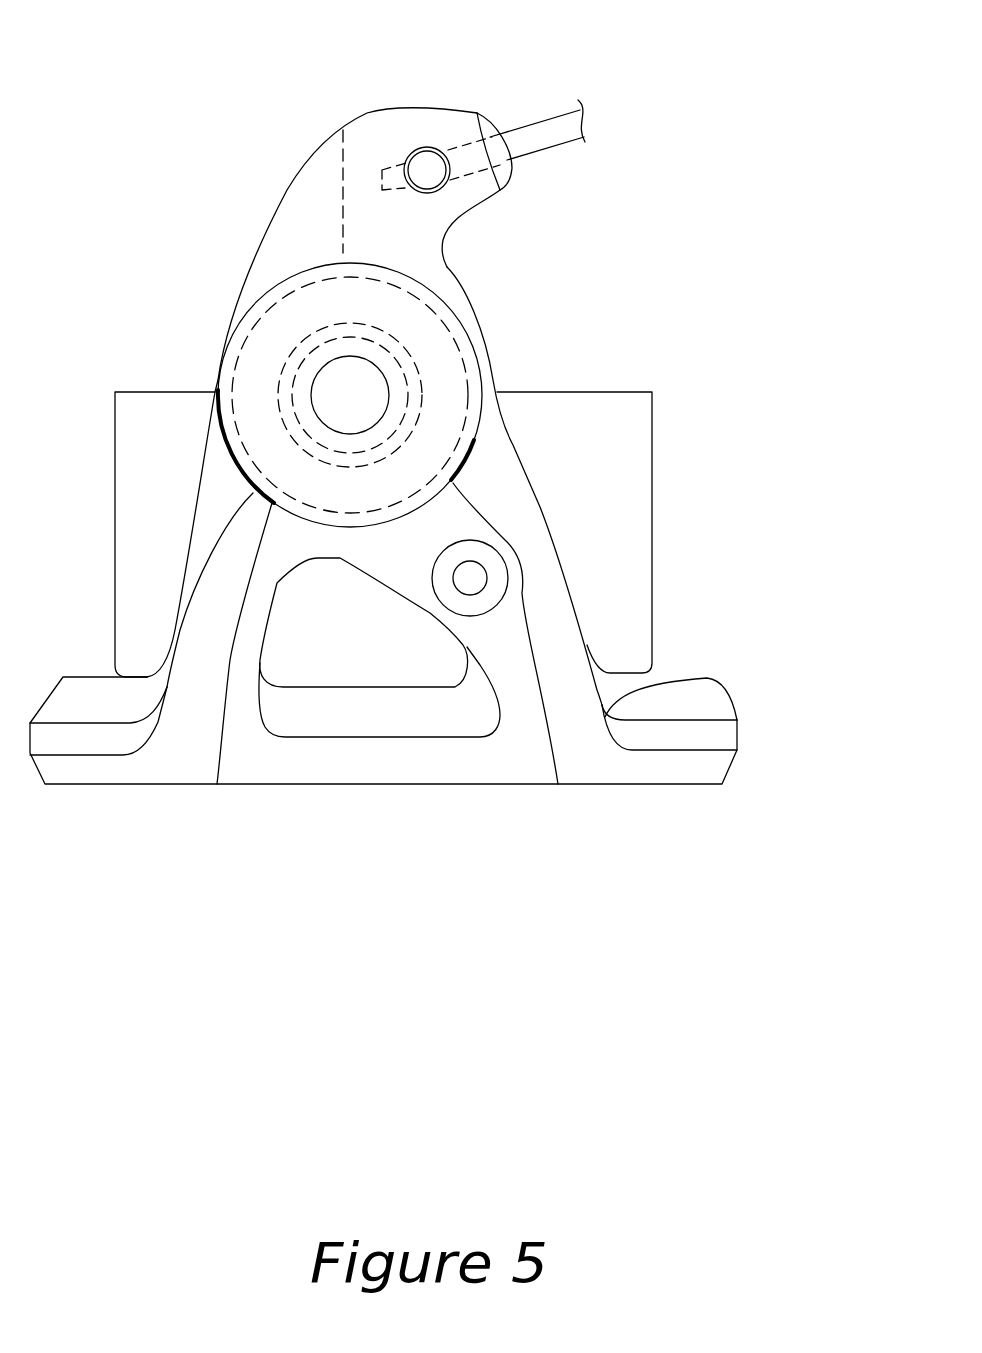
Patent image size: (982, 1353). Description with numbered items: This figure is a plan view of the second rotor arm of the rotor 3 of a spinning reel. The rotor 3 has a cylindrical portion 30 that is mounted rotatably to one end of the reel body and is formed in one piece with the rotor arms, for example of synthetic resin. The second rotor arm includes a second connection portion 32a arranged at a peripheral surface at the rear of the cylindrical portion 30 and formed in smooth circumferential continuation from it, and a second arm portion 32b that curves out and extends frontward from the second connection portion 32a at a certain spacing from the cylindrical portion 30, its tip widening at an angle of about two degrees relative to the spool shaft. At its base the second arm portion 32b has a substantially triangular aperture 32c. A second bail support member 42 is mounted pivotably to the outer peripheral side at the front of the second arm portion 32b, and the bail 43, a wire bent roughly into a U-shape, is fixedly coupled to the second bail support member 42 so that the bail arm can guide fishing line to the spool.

The rotor 3 is at (603, 370).
The cylindrical portion 30 is at (620, 485).
The second connection portion 32a is at (598, 732).
The second arm portion 32b is at (563, 652).
The substantially triangular aperture 32c is at (440, 703).
The second bail support member 42 is at (430, 263).
The bail 43 is at (540, 133).